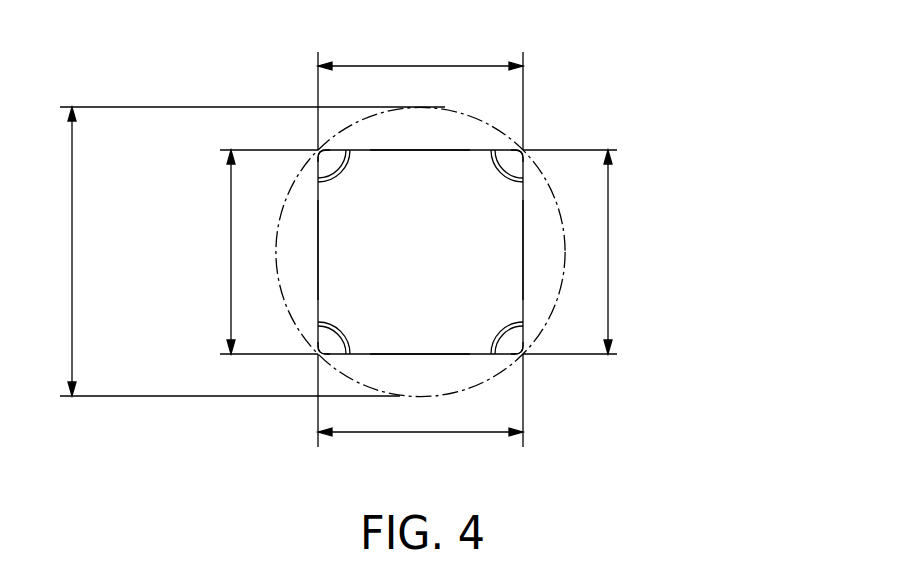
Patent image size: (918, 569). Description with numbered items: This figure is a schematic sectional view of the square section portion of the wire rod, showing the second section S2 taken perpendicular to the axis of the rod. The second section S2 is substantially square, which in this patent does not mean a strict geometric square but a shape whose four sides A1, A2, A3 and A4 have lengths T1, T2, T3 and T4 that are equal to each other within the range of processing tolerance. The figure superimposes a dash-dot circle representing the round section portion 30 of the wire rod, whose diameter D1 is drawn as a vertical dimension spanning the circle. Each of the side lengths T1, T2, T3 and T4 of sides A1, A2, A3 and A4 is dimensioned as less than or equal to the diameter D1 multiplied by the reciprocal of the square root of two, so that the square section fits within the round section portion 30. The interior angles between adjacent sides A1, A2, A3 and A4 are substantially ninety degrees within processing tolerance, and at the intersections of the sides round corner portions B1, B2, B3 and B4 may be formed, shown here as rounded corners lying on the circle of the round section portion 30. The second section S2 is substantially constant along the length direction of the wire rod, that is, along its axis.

The round section portion 30 is at (285, 198).
The second section S2 is at (464, 254).
The side A1 is at (318, 253).
The side A2 is at (523, 253).
The side A3 is at (422, 150).
The side A4 is at (421, 354).
The round corner portion B1 is at (318, 150).
The round corner portion B2 is at (318, 354).
The round corner portion B3 is at (523, 150).
The round corner portion B4 is at (523, 354).
The diameter of the round section portion D1 is at (242, 251).
The length of side T1 is at (210, 254).
The length of side T2 is at (735, 254).
The length of side T3 is at (475, 31).
The length of side T4 is at (475, 465).